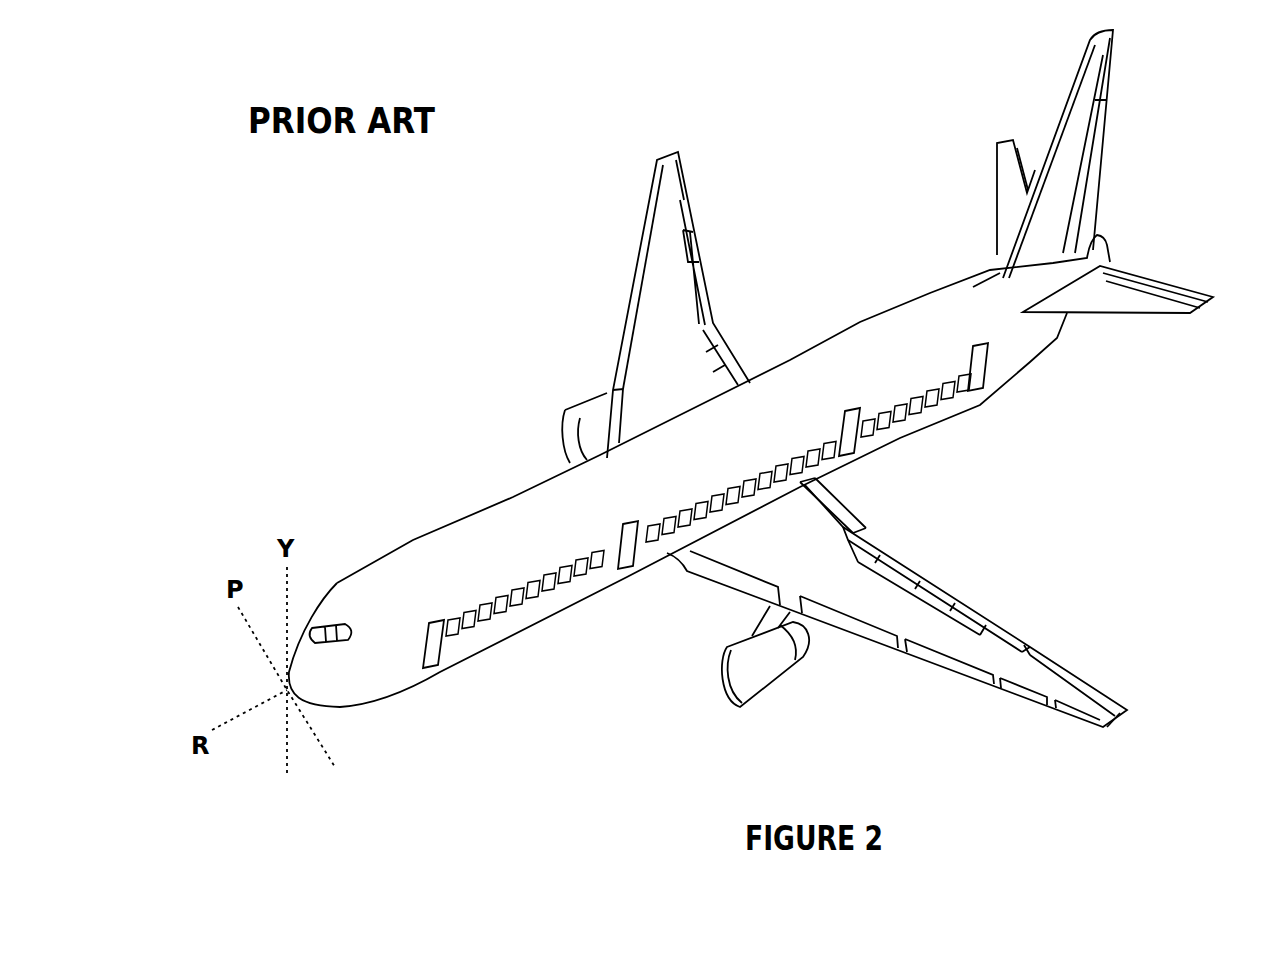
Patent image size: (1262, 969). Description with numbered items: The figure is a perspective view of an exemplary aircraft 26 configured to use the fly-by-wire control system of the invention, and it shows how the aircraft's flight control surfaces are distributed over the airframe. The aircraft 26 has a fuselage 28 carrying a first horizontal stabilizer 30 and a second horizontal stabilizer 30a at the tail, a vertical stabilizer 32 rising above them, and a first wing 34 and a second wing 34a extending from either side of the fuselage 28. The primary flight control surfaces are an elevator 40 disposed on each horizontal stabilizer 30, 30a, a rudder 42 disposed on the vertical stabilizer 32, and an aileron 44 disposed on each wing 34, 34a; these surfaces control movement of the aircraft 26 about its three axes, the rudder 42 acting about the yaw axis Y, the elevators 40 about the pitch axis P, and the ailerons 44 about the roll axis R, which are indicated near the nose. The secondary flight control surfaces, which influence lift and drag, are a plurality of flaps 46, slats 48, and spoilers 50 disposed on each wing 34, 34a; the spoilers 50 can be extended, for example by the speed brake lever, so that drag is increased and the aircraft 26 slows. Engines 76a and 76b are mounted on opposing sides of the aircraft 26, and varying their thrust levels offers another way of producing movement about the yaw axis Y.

The aircraft 26 is at (814, 184).
The fuselage 28 is at (860, 326).
The first horizontal stabilizer 30 is at (1110, 318).
The second horizontal stabilizer 30a is at (993, 167).
The vertical stabilizer 32 is at (1099, 206).
The first wing 34 is at (1038, 712).
The second wing 34a is at (648, 160).
The elevator 40 is at (1014, 148).
The rudder 42 is at (1112, 102).
The aileron 44 is at (690, 184).
The flaps 46 is at (724, 305).
The slats 48 is at (614, 350).
The spoilers 50 is at (680, 262).
The engine 76a is at (764, 704).
The engine 76b is at (557, 408).